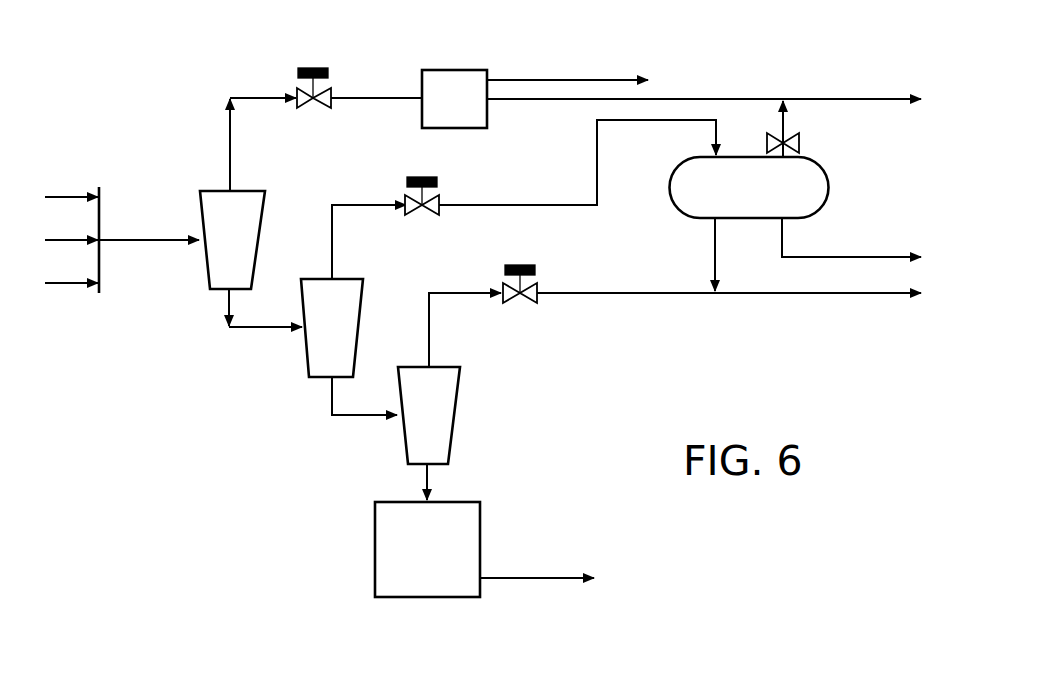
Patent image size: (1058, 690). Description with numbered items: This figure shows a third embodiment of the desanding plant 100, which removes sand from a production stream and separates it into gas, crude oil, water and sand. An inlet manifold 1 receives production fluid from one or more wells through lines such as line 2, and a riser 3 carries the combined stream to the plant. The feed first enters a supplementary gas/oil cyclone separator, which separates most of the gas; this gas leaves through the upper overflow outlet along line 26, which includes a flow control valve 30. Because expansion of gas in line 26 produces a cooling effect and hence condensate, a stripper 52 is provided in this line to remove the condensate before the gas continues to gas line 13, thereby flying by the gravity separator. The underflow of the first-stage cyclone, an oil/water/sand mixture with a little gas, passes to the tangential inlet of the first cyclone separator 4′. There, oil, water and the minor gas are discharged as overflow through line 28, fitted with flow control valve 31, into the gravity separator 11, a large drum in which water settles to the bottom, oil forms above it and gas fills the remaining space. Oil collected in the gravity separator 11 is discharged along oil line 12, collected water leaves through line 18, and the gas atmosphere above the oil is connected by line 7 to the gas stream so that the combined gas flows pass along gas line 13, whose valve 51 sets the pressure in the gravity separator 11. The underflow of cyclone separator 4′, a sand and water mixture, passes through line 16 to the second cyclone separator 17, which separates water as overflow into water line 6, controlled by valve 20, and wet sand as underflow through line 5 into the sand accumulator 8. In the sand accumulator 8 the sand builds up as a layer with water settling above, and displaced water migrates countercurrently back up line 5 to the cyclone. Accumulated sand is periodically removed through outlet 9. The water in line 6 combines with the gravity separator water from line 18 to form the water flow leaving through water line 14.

The desanding plant 100 is at (708, 57).
The inlet manifold 1 is at (101, 197).
The production well line 2 is at (62, 196).
The riser 3 is at (150, 243).
The first cyclone separator 4′ is at (362, 310).
The underflow line 16 is at (258, 330).
The overflow line 28 is at (361, 203).
The flow control valve 31 is at (423, 214).
The second cyclone separator 17 is at (458, 395).
The water line 6 is at (456, 290).
The control valve 20 is at (520, 264).
The wet sand line 5 is at (431, 488).
The sand accumulator 8 is at (373, 512).
The sand discharge line 9 is at (533, 583).
The flow control valve 30 is at (313, 67).
The gas overflow line 26 is at (380, 95).
The stripper 52 is at (465, 130).
The gas line 13 is at (807, 97).
The gravity separator 11 is at (829, 188).
The gas line 7 is at (786, 125).
The valve 51 is at (800, 146).
The oil line 12 is at (837, 255).
The water line 18 is at (720, 275).
The water line 14 is at (790, 297).